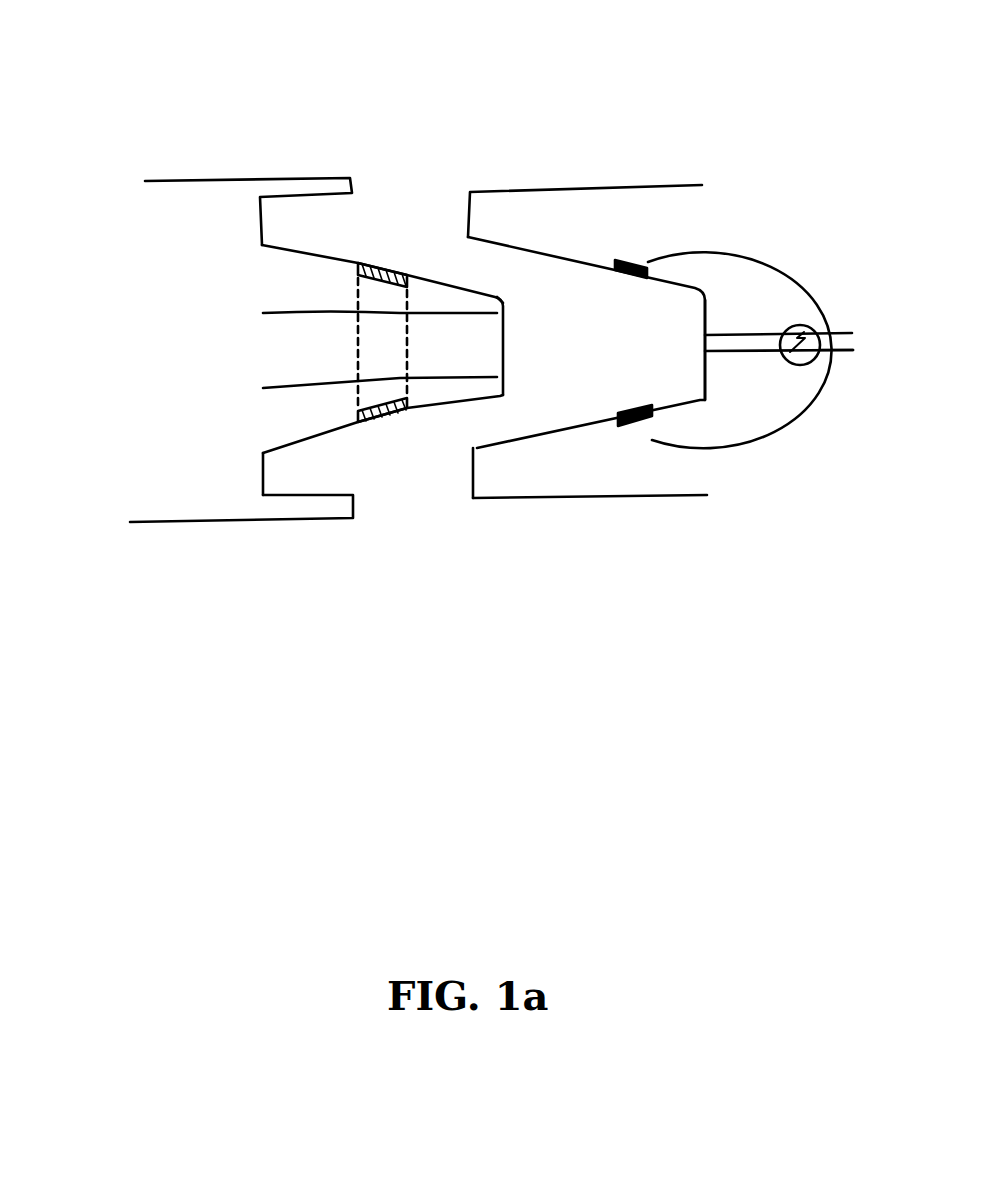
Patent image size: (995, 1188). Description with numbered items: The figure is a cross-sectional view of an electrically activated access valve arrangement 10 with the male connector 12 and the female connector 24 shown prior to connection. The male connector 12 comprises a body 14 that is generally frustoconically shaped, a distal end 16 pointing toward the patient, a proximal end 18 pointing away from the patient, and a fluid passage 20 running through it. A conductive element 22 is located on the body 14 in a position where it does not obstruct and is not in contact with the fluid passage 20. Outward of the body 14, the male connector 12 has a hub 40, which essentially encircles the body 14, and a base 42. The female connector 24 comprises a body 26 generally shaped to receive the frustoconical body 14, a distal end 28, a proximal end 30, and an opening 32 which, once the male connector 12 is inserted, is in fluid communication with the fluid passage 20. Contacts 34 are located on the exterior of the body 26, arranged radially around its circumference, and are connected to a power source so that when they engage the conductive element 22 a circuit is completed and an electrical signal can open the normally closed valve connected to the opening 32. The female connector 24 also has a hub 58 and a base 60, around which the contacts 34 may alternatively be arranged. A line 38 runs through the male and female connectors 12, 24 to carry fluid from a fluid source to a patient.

The electrically activated access valve arrangement 10 is at (75, 64).
The male connector 12 is at (226, 190).
The body 14 is at (300, 258).
The distal end 16 is at (508, 292).
The proximal end 18 is at (152, 452).
The fluid passage 20 is at (300, 373).
The conductive element 22 is at (381, 420).
The female connector 24 is at (548, 202).
The body 26 is at (556, 269).
The distal end 28 is at (692, 311).
The proximal end 30 is at (800, 340).
The opening 32 is at (712, 360).
The contacts 34 is at (663, 252).
The line 38 is at (847, 352).
The hub 40 is at (268, 510).
The base 42 is at (258, 472).
The hub 58 is at (560, 497).
The base 60 is at (476, 477).